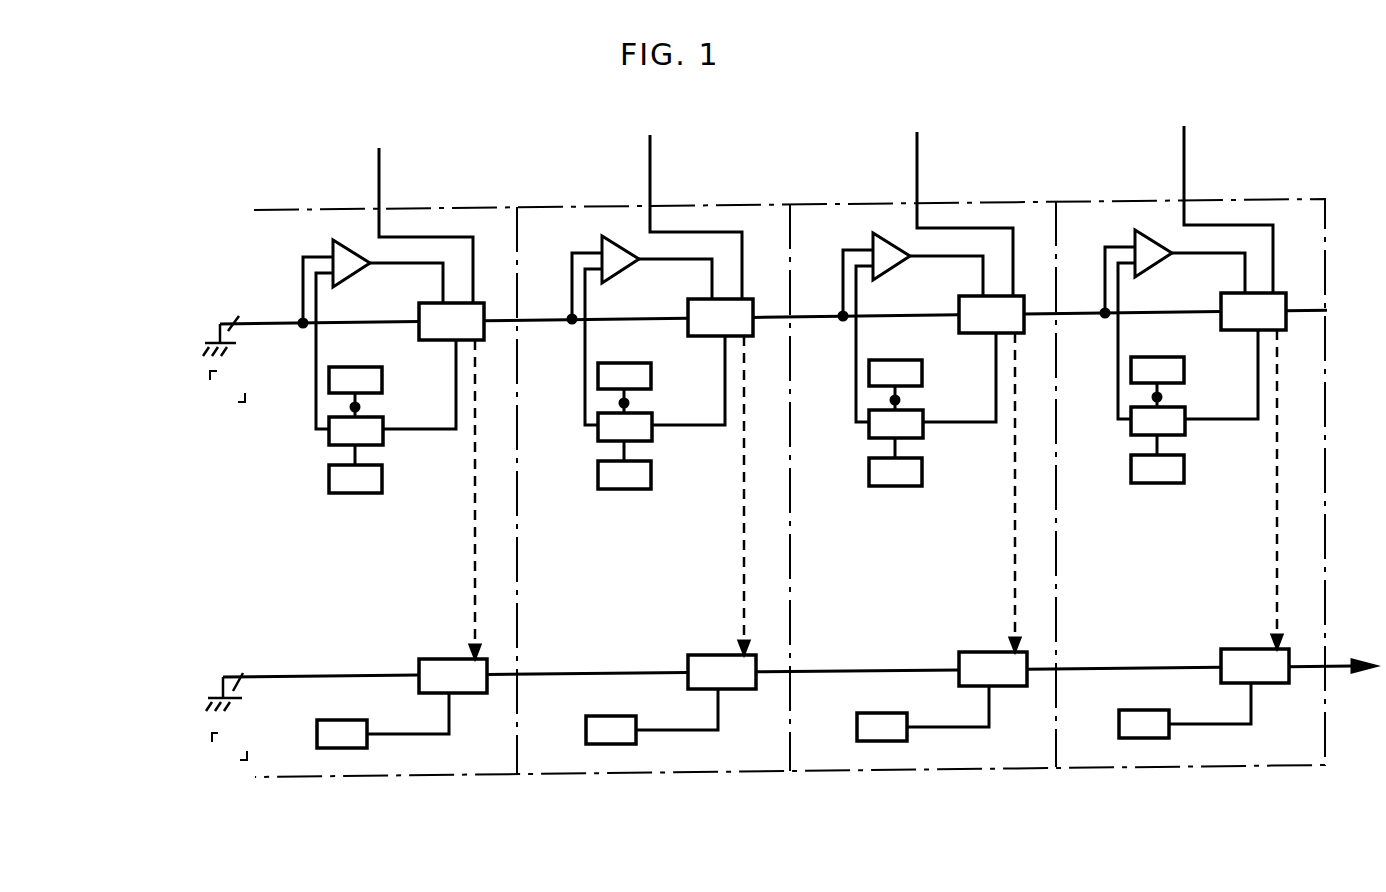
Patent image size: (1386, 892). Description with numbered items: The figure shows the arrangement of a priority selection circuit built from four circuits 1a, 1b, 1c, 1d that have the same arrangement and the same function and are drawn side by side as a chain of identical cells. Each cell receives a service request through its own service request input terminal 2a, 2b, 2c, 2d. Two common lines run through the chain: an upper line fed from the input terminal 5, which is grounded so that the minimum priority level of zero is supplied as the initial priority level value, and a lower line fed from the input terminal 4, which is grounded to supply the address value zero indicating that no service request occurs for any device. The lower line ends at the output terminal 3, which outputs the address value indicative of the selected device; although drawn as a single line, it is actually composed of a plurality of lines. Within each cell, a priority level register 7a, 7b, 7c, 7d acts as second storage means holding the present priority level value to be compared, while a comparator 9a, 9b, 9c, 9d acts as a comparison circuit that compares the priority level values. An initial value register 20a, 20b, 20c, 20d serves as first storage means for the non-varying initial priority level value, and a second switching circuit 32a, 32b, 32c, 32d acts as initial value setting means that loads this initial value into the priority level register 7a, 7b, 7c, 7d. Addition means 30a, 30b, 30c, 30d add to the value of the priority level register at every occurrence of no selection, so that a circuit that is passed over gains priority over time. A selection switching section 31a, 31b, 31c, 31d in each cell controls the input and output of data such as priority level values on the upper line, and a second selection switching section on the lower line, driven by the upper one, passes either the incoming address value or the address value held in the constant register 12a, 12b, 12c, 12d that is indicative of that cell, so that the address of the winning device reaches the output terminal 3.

The circuit 1a is at (424, 777).
The circuit 1b is at (638, 487).
The circuit 1c is at (911, 484).
The circuit 1d is at (1173, 479).
The service request input terminal 2a is at (383, 170).
The service request input terminal 2b is at (696, 217).
The service request input terminal 2c is at (965, 214).
The service request input terminal 2d is at (1228, 209).
The output terminal 3 is at (1342, 676).
The input terminal 4 is at (226, 671).
The input terminal 5 is at (225, 318).
The priority level register 7a is at (385, 440).
The priority level register 7b is at (663, 405).
The priority level register 7c is at (933, 402).
The priority level register 7d is at (1196, 399).
The comparator 9a is at (352, 280).
The comparator 9b is at (640, 279).
The comparator 9c is at (911, 276).
The comparator 9d is at (1173, 273).
The constant register 12a is at (317, 732).
The constant register 12b is at (625, 712).
The constant register 12c is at (896, 709).
The constant register 12d is at (1158, 706).
The initial value register 20a is at (316, 360).
The initial value register 20b is at (561, 347).
The initial value register 20c is at (834, 344).
The initial value register 20d is at (1096, 341).
The addition means 30a is at (355, 493).
The addition means 30b is at (635, 497).
The addition means 30c is at (905, 494).
The addition means 30d is at (1168, 491).
The selection switching section 31a is at (419, 338).
The selection switching section 31b is at (675, 494).
The selection switching section 31c is at (946, 491).
The selection switching section 31d is at (1208, 488).
The second switching circuit 32a is at (358, 406).
The second switching circuit 32b is at (656, 386).
The second switching circuit 32c is at (926, 383).
The second switching circuit 32d is at (1189, 380).